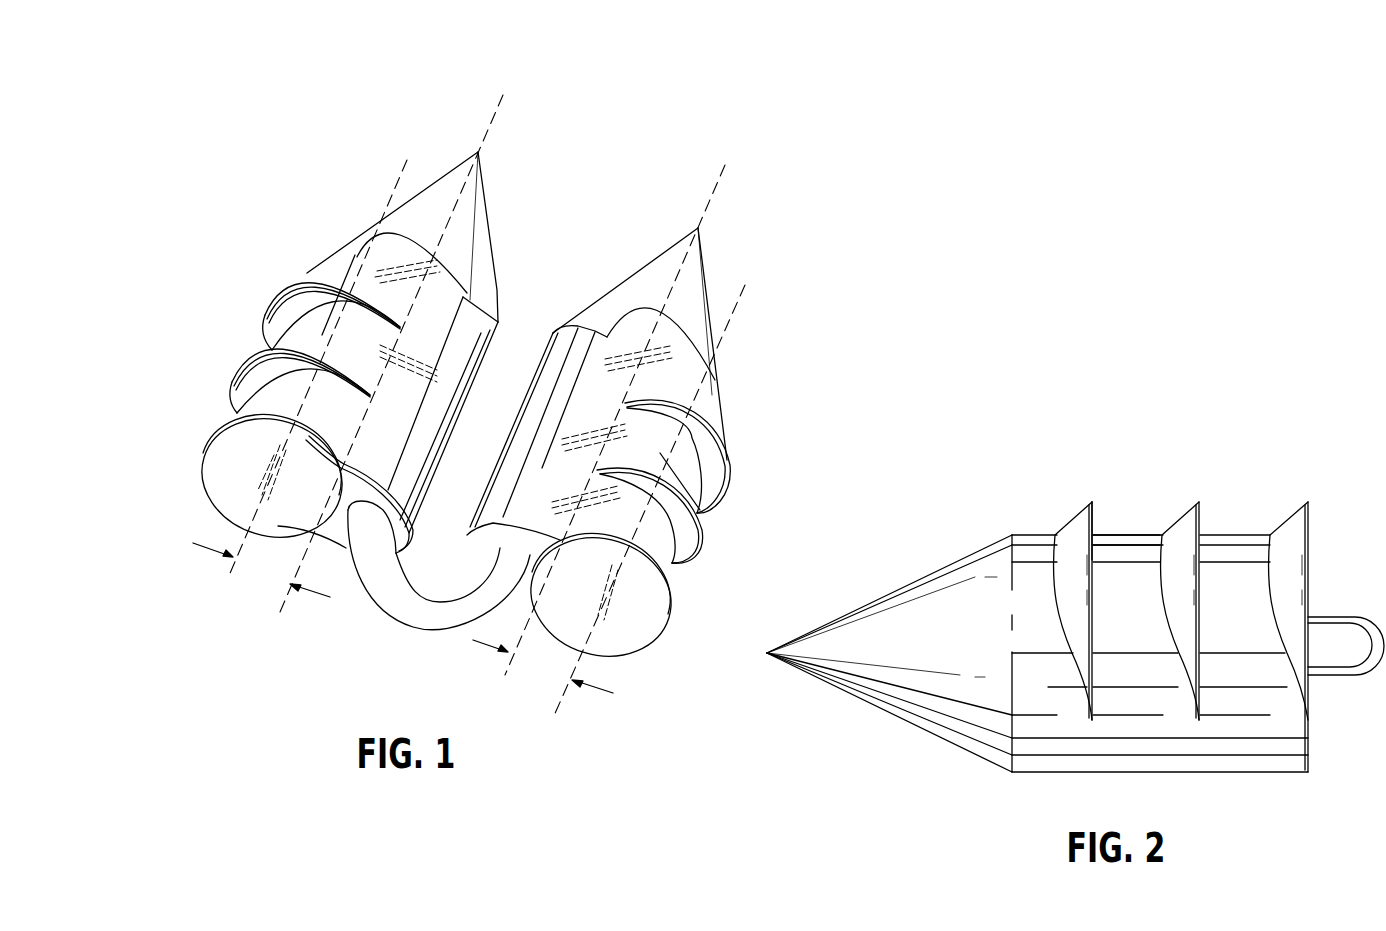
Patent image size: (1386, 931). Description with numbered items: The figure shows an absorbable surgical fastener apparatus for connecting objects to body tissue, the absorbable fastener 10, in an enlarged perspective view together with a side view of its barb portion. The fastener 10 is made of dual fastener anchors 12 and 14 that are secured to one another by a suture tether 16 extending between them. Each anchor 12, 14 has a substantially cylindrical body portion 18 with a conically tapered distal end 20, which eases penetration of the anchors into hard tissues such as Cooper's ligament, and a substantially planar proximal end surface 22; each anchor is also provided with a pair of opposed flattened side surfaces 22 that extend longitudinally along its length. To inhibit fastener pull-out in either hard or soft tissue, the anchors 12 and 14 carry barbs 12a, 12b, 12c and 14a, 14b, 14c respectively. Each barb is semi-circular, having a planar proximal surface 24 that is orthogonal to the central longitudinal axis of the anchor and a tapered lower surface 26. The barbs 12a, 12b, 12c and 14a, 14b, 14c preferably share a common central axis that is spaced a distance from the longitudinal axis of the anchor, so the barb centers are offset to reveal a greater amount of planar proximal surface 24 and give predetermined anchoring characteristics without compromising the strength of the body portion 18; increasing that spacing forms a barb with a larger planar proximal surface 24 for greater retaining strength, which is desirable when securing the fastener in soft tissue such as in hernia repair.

In FIG. 1, the absorbable fastener 10 is at (758, 208).
In FIG. 2, the absorbable fastener 10 is at (1013, 470).
In FIG. 1, the fastener anchor 12 is at (267, 157).
In FIG. 2, the fastener anchor 12 is at (998, 518).
In FIG. 1, the barb 12a is at (287, 307).
In FIG. 2, the barb 12a is at (1068, 538).
In FIG. 1, the barb 12b is at (250, 372).
In FIG. 2, the barb 12b is at (1190, 520).
In FIG. 1, the barb 12c is at (222, 455).
In FIG. 2, the barb 12c is at (1290, 532).
In FIG. 1, the fastener anchor 14 is at (820, 387).
In FIG. 1, the barb 14a is at (720, 473).
In FIG. 1, the barb 14b is at (690, 550).
In FIG. 1, the barb 14c is at (673, 617).
In FIG. 1, the suture tether 16 is at (428, 617).
In FIG. 2, the suture tether 16 is at (1343, 628).
In FIG. 1, the body portion 18 is at (332, 268).
In FIG. 2, the body portion 18 is at (1135, 550).
In FIG. 1, the conically tapered distal end 20 is at (430, 192).
In FIG. 2, the conically tapered distal end 20 is at (848, 638).
In FIG. 1, the flattened side surface 22 is at (450, 297).
In FIG. 2, the flattened side surface 22 is at (1310, 753).
In FIG. 1, the planar proximal surface 24 is at (275, 318).
In FIG. 2, the planar proximal surface 24 is at (1093, 520).
In FIG. 2, the tapered lower surface 26 is at (1085, 502).